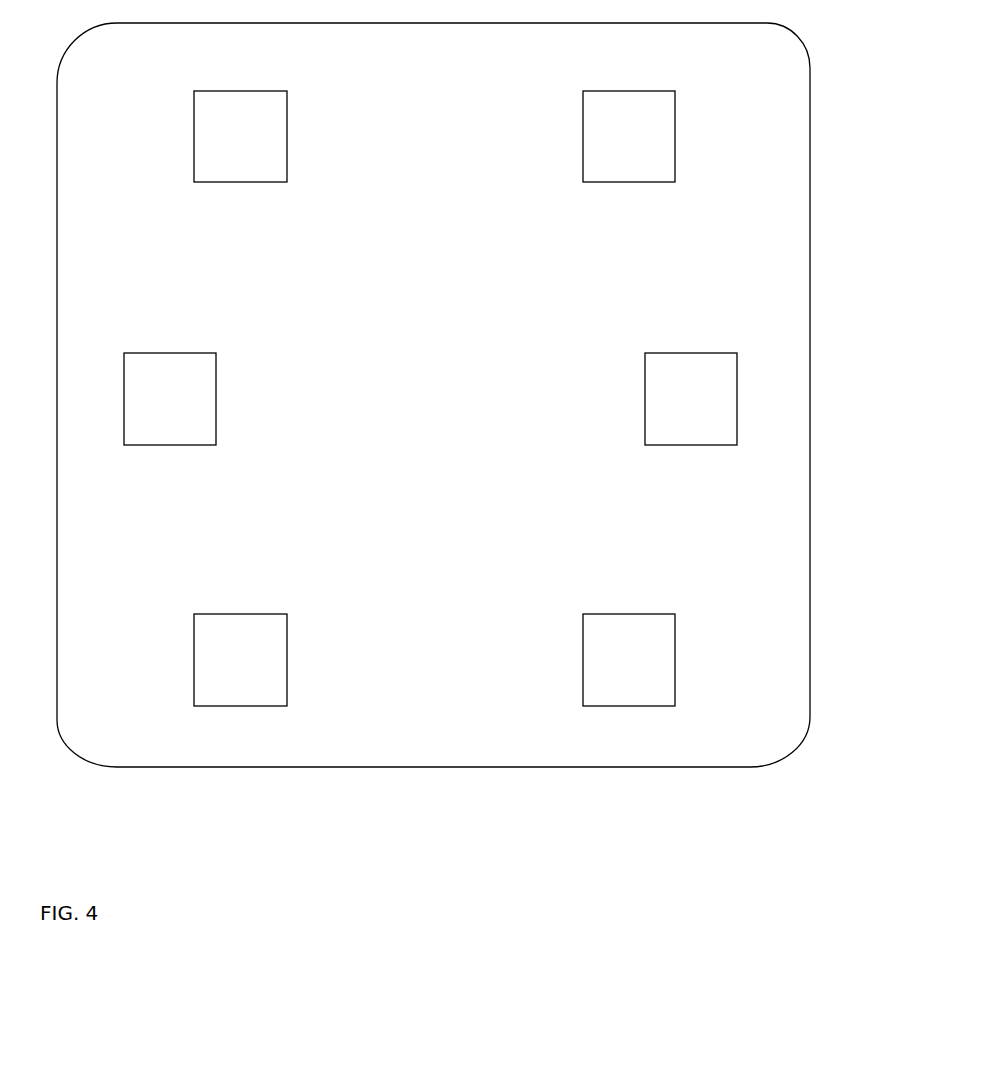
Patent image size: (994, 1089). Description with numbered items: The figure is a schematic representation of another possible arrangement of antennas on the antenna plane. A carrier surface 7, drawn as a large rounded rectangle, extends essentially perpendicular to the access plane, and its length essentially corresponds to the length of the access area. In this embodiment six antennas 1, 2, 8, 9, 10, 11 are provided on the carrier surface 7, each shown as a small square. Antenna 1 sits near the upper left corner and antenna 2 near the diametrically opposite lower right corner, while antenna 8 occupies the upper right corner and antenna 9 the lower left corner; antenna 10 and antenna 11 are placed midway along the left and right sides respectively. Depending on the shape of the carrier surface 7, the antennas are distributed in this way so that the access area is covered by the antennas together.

The carrier surface 7 is at (775, 213).
The antenna 1 is at (240, 136).
The antenna 8 is at (629, 136).
The antenna 10 is at (170, 399).
The antenna 11 is at (691, 399).
The antenna 9 is at (240, 660).
The antenna 2 is at (629, 660).